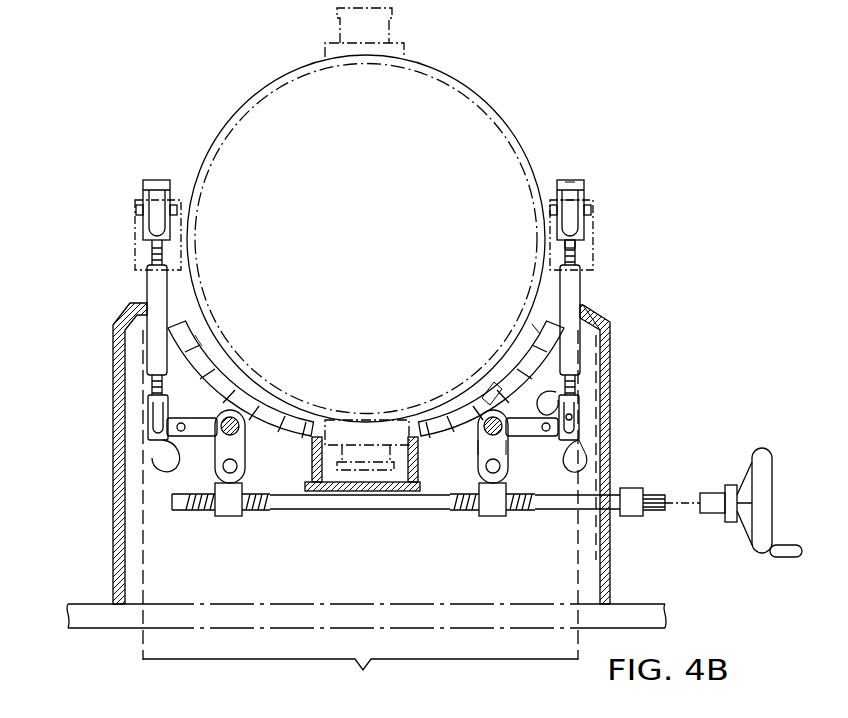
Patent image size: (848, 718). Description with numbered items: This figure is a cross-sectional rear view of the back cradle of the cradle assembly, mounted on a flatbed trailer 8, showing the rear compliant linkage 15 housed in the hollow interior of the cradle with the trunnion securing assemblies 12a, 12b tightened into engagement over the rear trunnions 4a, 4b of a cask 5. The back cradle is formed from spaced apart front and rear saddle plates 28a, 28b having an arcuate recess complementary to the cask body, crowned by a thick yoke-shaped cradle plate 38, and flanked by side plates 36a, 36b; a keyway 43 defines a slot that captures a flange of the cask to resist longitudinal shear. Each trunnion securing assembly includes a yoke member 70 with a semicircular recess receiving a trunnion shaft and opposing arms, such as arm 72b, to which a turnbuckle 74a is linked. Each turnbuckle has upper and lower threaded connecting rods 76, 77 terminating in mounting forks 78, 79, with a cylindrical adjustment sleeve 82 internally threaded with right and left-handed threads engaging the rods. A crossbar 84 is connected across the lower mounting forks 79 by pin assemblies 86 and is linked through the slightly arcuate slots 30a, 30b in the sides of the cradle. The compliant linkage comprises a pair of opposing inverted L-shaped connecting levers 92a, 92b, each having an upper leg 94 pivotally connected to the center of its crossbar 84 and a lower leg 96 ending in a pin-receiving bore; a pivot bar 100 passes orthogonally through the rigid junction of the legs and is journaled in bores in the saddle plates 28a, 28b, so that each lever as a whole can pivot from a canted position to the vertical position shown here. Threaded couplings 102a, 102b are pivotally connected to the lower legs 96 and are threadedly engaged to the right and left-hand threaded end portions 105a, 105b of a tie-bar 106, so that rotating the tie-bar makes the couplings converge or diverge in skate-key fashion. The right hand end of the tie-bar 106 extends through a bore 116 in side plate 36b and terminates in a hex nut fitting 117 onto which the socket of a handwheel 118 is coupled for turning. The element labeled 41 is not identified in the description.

The cask 5 is at (370, 231).
The flatbed trailer 8 is at (82, 604).
The rear compliant linkage 15 is at (360, 518).
The rear trunnion 4a is at (140, 238).
The rear trunnion 4b is at (595, 226).
The trunnion securing assembly 12a is at (145, 297).
The trunnion securing assembly 12b is at (585, 300).
The front saddle plate 28a is at (492, 400).
The rear saddle plate 28b is at (538, 328).
The elongated slot 30a is at (160, 452).
The elongated slot 30b is at (585, 466).
The side plate 36a is at (113, 355).
The side plate 36b is at (612, 455).
The cradle plate 38 is at (292, 398).
The pedestal 41 is at (378, 440).
The keyway 43 is at (240, 390).
The yoke member 70 is at (571, 181).
The arm 72b is at (576, 203).
The turnbuckle 74a is at (585, 330).
The upper threaded connecting rod 76 is at (580, 257).
The lower threaded connecting rod 77 is at (580, 390).
The mounting fork 78 is at (580, 241).
The lower mounting fork 79 is at (580, 412).
The cylindrical adjustment sleeve 82 is at (582, 275).
The crossbar 84 is at (158, 422).
The pin assembly 86 is at (578, 452).
The inverted L-shaped connecting lever 92a is at (218, 455).
The inverted L-shaped connecting lever 92b is at (465, 439).
The upper leg 94 is at (556, 398).
The lower leg 96 is at (478, 450).
The pivot bar 100 is at (508, 442).
The threaded coupling 102a is at (232, 518).
The threaded coupling 102b is at (495, 518).
The threaded end portion 105a is at (202, 512).
The threaded end portion 105b is at (460, 512).
The tie-bar 106 is at (314, 512).
The bore 116 is at (622, 516).
The hex nut fitting 117 is at (660, 512).
The handwheel 118 is at (748, 540).